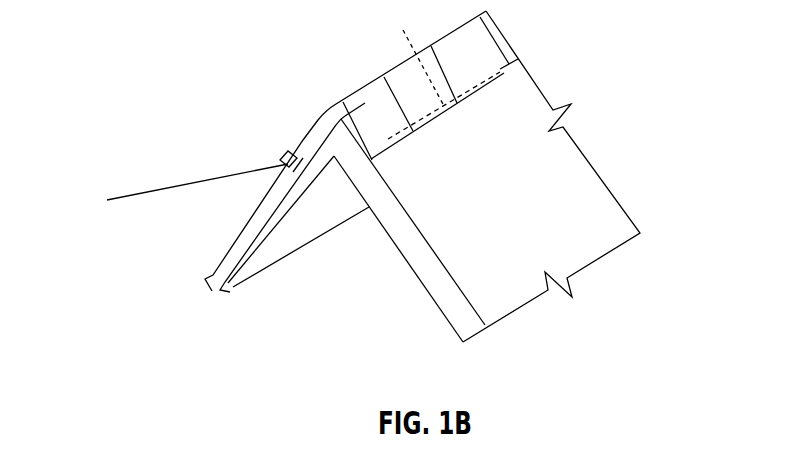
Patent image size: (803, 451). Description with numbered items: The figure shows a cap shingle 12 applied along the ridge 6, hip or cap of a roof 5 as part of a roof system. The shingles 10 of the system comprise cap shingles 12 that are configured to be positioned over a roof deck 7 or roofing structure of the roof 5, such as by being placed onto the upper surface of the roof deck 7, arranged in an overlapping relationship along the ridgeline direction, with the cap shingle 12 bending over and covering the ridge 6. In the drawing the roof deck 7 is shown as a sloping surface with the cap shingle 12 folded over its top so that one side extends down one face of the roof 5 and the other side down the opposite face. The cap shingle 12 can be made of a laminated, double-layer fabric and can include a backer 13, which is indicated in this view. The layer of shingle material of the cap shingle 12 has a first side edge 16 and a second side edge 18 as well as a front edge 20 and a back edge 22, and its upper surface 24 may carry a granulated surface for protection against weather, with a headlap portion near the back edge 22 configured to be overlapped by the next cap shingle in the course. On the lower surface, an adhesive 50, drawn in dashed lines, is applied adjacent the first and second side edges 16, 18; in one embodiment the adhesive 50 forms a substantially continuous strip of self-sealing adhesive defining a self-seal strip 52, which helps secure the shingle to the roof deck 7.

The roof 5 is at (304, 282).
The ridge 6 is at (294, 173).
The roof deck 7 is at (522, 222).
The shingles 10 is at (357, 73).
The cap shingle 12 is at (358, 108).
The backer 13 is at (179, 188).
The first side edge 16 is at (284, 154).
The second side edge 18 is at (386, 155).
The front edge 20 is at (334, 162).
The back edge 22 is at (506, 34).
The upper surface 24 is at (403, 78).
The adhesive 50 is at (307, 138).
The self-seal strip 52 is at (416, 55).